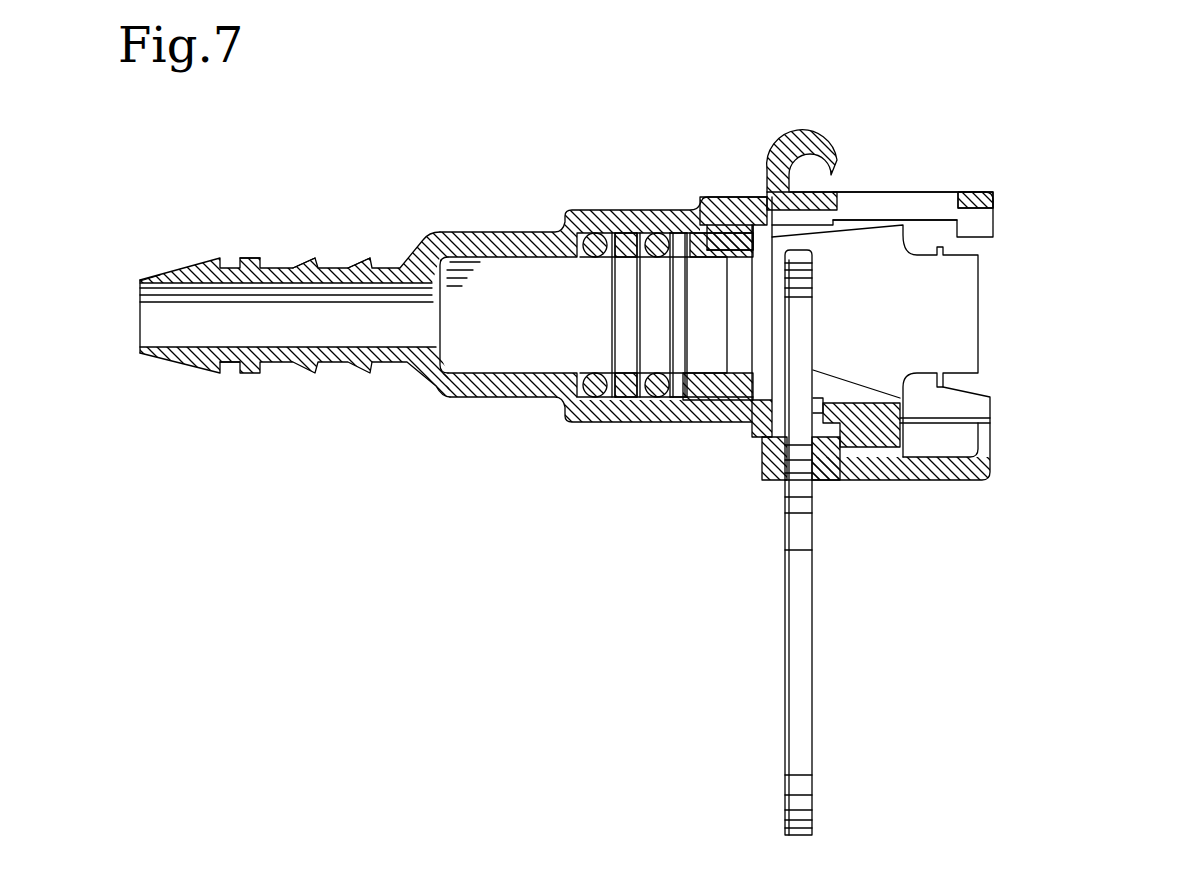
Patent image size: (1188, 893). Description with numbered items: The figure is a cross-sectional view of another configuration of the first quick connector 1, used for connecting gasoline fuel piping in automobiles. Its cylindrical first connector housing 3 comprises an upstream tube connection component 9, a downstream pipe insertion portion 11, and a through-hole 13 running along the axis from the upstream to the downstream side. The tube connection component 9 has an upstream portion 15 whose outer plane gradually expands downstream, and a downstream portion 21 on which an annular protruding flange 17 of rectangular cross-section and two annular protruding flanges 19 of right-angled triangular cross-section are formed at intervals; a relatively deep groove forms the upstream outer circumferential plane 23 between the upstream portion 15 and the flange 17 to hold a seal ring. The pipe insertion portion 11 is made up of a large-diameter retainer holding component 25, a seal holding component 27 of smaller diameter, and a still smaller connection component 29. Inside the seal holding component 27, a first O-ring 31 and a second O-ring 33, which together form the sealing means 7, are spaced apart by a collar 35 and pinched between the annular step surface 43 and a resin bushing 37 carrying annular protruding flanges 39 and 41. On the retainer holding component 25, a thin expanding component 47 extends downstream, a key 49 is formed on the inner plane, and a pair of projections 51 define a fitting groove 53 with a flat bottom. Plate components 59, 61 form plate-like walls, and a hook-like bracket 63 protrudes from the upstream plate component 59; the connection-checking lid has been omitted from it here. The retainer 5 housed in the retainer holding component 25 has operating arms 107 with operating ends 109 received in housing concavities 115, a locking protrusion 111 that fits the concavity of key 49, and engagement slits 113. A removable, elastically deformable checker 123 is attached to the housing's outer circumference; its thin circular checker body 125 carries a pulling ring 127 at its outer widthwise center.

The quick connector 1 is at (181, 121).
The first connector housing 3 is at (487, 232).
The retainer 5 is at (982, 330).
The sealing means 7 is at (593, 308).
The tube connection component 9 is at (285, 247).
The pipe insertion portion 11 is at (682, 192).
The through-hole 13 is at (302, 325).
The upstream portion 15 is at (207, 263).
The annular protruding flange 17 is at (248, 255).
The annular protruding flanges 19 is at (312, 257).
The downstream portion 21 is at (330, 353).
The upstream outer circumferential plane 23 is at (240, 362).
The retainer holding component 25 is at (957, 403).
The seal holding component 27 is at (672, 398).
The connection component 29 is at (467, 387).
The first O-ring 31 is at (606, 398).
The second O-ring 33 is at (648, 238).
The collar 35 is at (625, 398).
The resin bushing 37 is at (733, 403).
The annular protruding flange 39 is at (713, 228).
The annular protruding flange 41 is at (742, 243).
The annular step surface 43 is at (592, 238).
The expanding component 47 is at (967, 467).
The key 49 is at (958, 438).
The projections 51 is at (768, 460).
The fitting groove 53 is at (793, 483).
The plate component 59 is at (825, 200).
The plate component 61 is at (1000, 197).
The bracket 63 is at (800, 135).
The operating arms 107 is at (957, 302).
The operating ends 109 is at (980, 352).
The locking protrusion 111 is at (878, 443).
The engagement slits 113 is at (783, 323).
The housing concavities 115 is at (982, 257).
The checker 123 is at (835, 612).
The checker body 125 is at (805, 358).
The pulling ring 127 is at (793, 695).